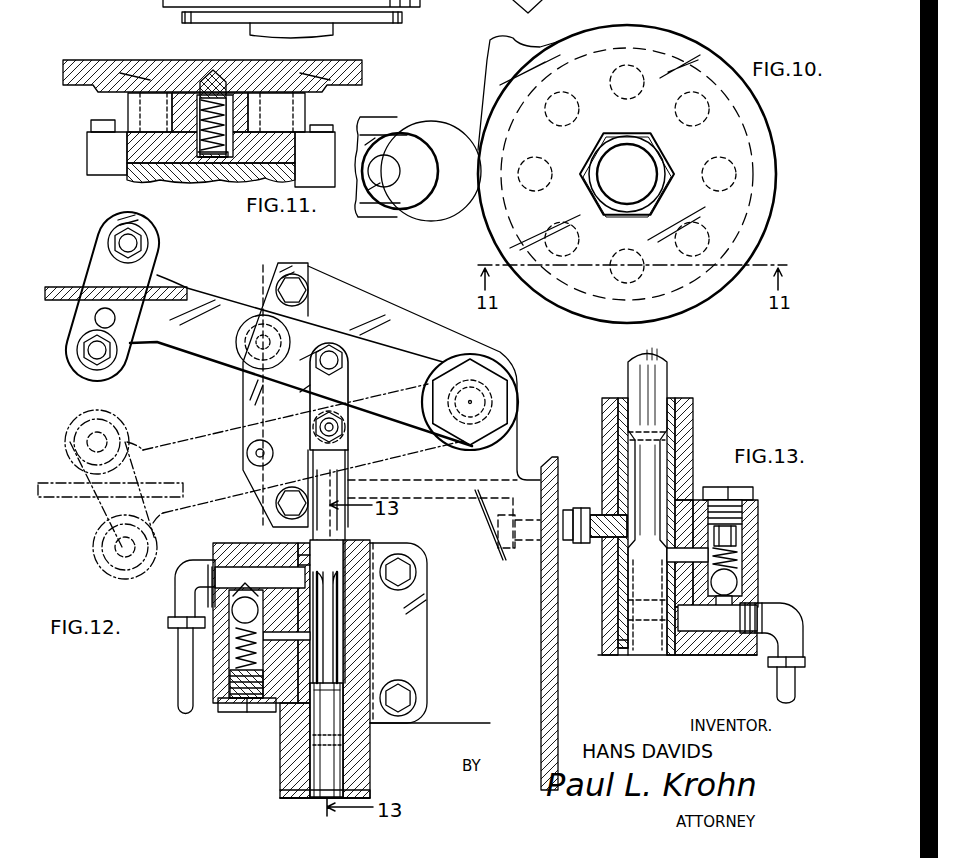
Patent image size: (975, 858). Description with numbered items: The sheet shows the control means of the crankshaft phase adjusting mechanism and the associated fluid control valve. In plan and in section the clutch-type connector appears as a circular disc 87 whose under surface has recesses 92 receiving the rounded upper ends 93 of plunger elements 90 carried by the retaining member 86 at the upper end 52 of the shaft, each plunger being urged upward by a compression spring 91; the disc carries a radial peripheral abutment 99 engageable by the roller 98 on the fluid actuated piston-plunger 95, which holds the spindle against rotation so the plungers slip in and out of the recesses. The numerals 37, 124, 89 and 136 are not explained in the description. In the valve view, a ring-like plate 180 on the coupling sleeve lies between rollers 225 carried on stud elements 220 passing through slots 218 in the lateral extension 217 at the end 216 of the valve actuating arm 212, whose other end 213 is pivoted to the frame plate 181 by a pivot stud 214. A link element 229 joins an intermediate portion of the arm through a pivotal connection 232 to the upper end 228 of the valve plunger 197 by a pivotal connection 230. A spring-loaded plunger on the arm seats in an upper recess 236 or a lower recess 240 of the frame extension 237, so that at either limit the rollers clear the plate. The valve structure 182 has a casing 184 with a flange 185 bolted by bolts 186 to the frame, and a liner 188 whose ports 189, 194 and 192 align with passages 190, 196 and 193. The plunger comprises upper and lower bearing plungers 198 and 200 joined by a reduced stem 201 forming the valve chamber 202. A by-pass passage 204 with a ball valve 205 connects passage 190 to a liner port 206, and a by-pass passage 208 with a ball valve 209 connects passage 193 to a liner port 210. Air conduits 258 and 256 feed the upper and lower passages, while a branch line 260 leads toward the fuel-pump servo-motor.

In FIG. 10, the cam disc 37 is at (772, 152).
In FIG. 10, the radial peripheral abutment 99 is at (495, 46).
In FIG. 10, the recesses 92 is at (705, 167).
In FIG. 11, the recesses 92 is at (229, 76).
In FIG. 11, the plate 124 is at (402, 20).
In FIG. 11, the plate 89 is at (360, 5).
In FIG. 11, the member 136 is at (447, 5).
In FIG. 11, the clutch plate or disc 87 is at (362, 72).
In FIG. 11, the retaining member 86 is at (87, 150).
In FIG. 11, the upper end of the shaft 52 is at (80, 178).
In FIG. 11, the upper rounded ends of the plungers 93 is at (216, 68).
In FIG. 11, the plunger elements 90 is at (205, 76).
In FIG. 11, the compression spring 91 is at (213, 160).
In FIG. 11, the piston-plunger 95 is at (355, 212).
In FIG. 11, the roller 98 is at (393, 218).
In FIG. 12, the arm extension 217 is at (115, 384).
In FIG. 12, the rollers 225 is at (148, 240).
In FIG. 12, the stud element 220 is at (125, 245).
In FIG. 12, the ring-like plate 180 is at (62, 290).
In FIG. 12, the slots 218 is at (98, 320).
In FIG. 12, the opposite end of the arm 216 is at (160, 273).
In FIG. 12, the lower recess 240 is at (243, 461).
In FIG. 12, the recess 236 is at (250, 352).
In FIG. 12, the frame extension 237 is at (250, 408).
In FIG. 12, the valve actuating arm 212 is at (380, 358).
In FIG. 12, the pivot pin or stud 214 is at (483, 383).
In FIG. 12, the end of the arm 213 is at (450, 362).
In FIG. 12, the link element 229 is at (340, 386).
In FIG. 12, the pivotal connection 232 is at (333, 352).
In FIG. 12, the pivotal connection 230 is at (339, 429).
In FIG. 12, the upper end of the valve plunger 228 is at (340, 452).
In FIG. 12, the upper bearing plunger 198 is at (335, 486).
In FIG. 12, the valve casing 184 is at (360, 653).
In FIG. 13, the valve casing 184 is at (605, 620).
In FIG. 12, the fluid passage 190 is at (267, 582).
In FIG. 12, the valve cylinder or liner 188 is at (303, 712).
In FIG. 13, the valve cylinder or liner 188 is at (622, 655).
In FIG. 12, the lower bearing plunger 200 is at (345, 785).
In FIG. 12, the valve plunger 197 is at (338, 740).
In FIG. 13, the valve plunger 197 is at (668, 372).
In FIG. 12, the valve chamber 202 is at (342, 637).
In FIG. 12, the stem 201 is at (333, 613).
In FIG. 12, the valve structure 182 is at (363, 737).
In FIG. 12, the flange 185 is at (423, 597).
In FIG. 12, the bolts 186 is at (402, 570).
In FIG. 12, the valve supporting frame plate 181 is at (443, 725).
In FIG. 12, the fluid port 189 is at (303, 553).
In FIG. 13, the fluid port 189 is at (670, 435).
In FIG. 12, the liner port 206 is at (278, 643).
In FIG. 13, the liner port 206 is at (667, 493).
In FIG. 12, the lower port 192 is at (315, 765).
In FIG. 13, the lower port 192 is at (682, 655).
In FIG. 12, the spring-loaded ball valve 205 is at (232, 613).
In FIG. 12, the by-pass passage 204 is at (232, 720).
In FIG. 12, the air delivery conduit 258 is at (177, 693).
In FIG. 13, the third port 194 is at (623, 535).
In FIG. 13, the central casing passage 196 is at (622, 533).
In FIG. 13, the liner port 210 is at (697, 553).
In FIG. 13, the by-pass passage 208 is at (733, 540).
In FIG. 13, the spring-loaded ball valve 209 is at (740, 573).
In FIG. 13, the fluid passage 193 is at (702, 620).
In FIG. 13, the branch line 260 is at (570, 517).
In FIG. 13, the air delivery conduit 256 is at (785, 688).